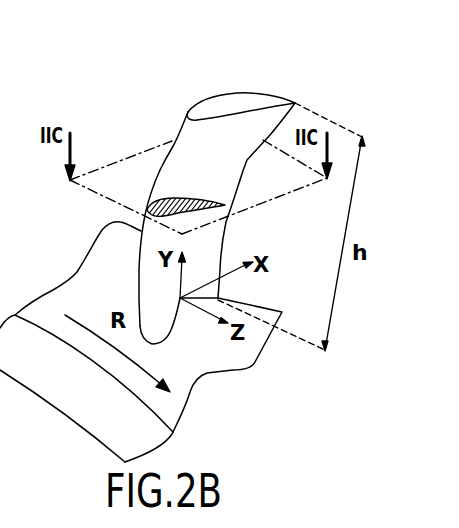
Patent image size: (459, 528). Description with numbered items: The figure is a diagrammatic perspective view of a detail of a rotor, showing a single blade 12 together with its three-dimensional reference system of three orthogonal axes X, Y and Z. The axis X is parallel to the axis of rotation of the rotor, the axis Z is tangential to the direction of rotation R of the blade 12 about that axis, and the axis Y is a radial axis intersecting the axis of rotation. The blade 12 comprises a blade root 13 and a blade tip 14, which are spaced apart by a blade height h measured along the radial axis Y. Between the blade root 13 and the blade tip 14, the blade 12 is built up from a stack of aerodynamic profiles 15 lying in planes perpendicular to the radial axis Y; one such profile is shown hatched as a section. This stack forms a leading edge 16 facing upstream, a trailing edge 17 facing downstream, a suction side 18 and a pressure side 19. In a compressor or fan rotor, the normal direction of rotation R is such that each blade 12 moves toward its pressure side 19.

The blade 12 is at (145, 115).
The blade root 13 is at (174, 322).
The blade tip 14 is at (223, 102).
The aerodynamic profile 15 is at (158, 200).
The leading edge 16 is at (138, 258).
The trailing edge 17 is at (223, 232).
The suction side 18 is at (185, 118).
The pressure side 19 is at (227, 167).